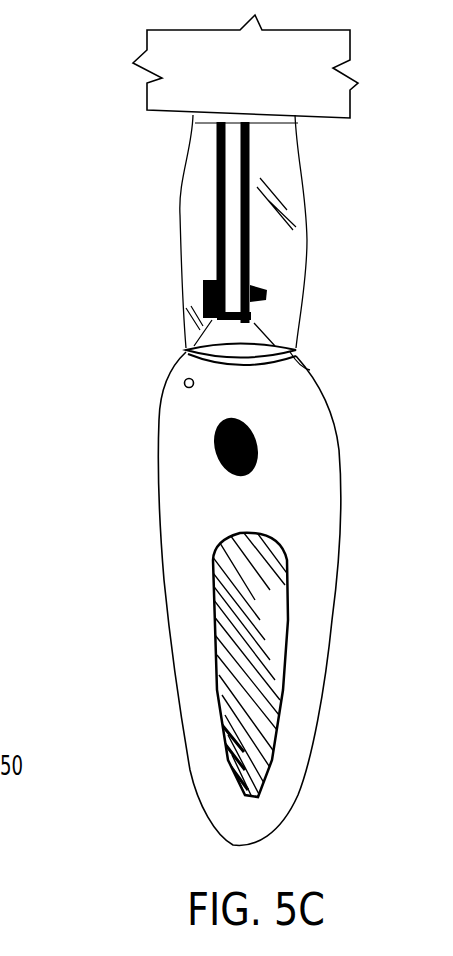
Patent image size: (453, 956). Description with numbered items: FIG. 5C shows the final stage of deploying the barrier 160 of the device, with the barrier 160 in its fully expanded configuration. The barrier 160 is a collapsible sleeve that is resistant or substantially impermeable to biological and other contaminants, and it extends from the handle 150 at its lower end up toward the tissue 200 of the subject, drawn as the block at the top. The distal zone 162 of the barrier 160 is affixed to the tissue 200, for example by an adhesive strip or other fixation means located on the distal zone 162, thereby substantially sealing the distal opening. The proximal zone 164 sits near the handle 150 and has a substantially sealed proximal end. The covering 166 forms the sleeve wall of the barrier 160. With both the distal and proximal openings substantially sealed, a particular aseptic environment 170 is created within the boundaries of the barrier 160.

The tissue 200 is at (275, 85).
The barrier 160 is at (205, 253).
The distal zone 162 is at (214, 114).
The proximal zone 164 is at (300, 358).
The covering 166 is at (203, 268).
The environment 170 is at (284, 248).
The handle 150 is at (355, 702).